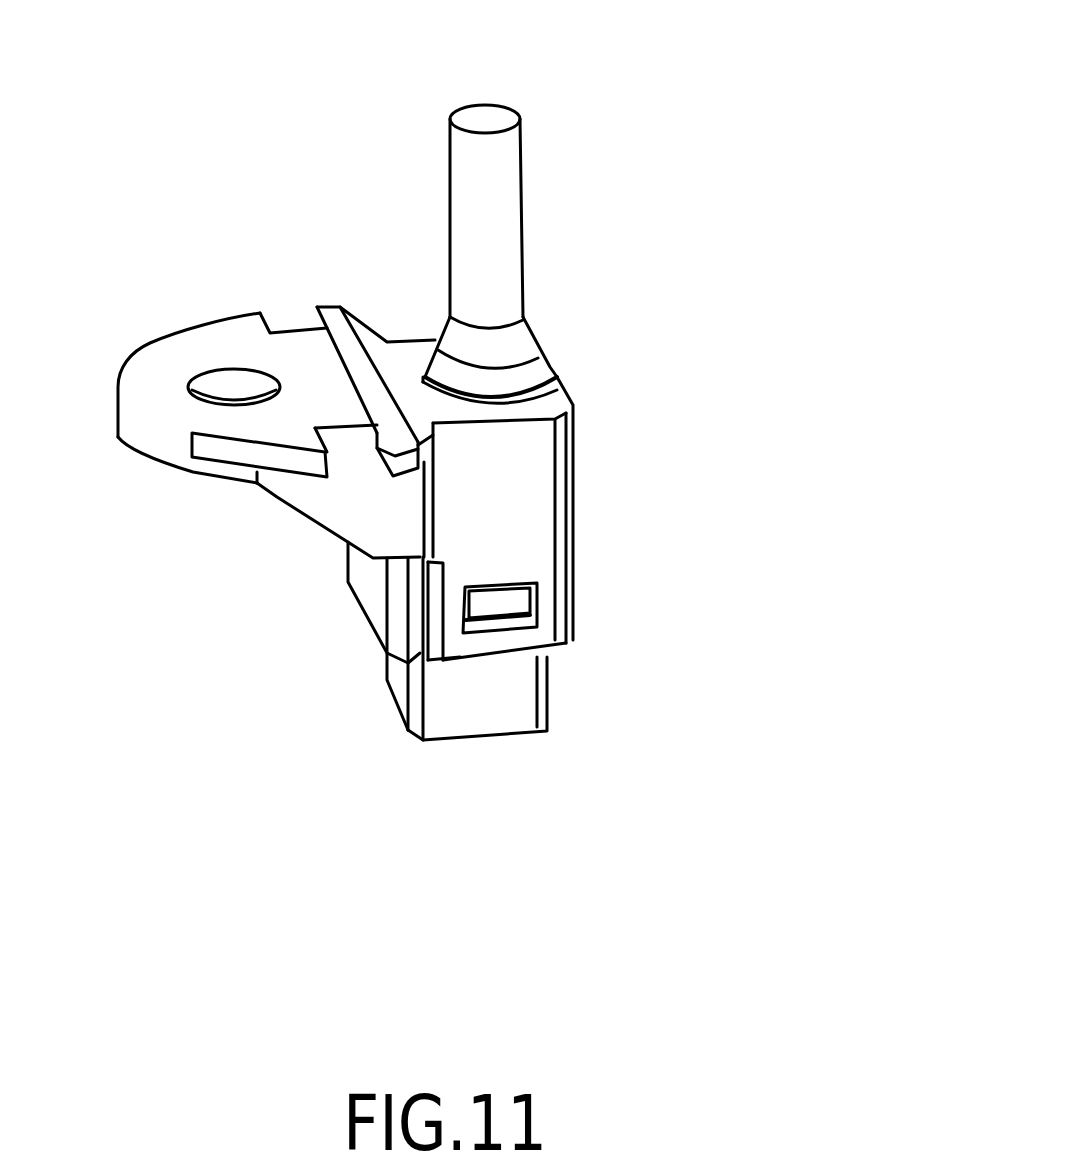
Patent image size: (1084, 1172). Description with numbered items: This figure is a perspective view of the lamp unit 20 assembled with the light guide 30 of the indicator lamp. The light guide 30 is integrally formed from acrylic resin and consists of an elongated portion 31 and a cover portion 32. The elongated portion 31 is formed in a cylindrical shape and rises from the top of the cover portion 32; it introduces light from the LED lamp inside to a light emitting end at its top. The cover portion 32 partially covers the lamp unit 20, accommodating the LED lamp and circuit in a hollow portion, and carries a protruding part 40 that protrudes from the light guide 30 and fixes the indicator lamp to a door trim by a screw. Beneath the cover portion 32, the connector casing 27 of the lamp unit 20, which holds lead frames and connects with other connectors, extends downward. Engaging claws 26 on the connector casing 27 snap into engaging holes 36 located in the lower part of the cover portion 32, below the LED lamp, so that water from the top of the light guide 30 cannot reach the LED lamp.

The lamp unit 20 is at (397, 667).
The engaging claws 26 is at (515, 610).
The connector casing 27 is at (510, 690).
The light guide 30 is at (387, 247).
The elongated portion 31 is at (505, 237).
The cover portion 32 is at (512, 437).
The engaging holes 36 is at (480, 609).
The protruding part 40 is at (237, 400).